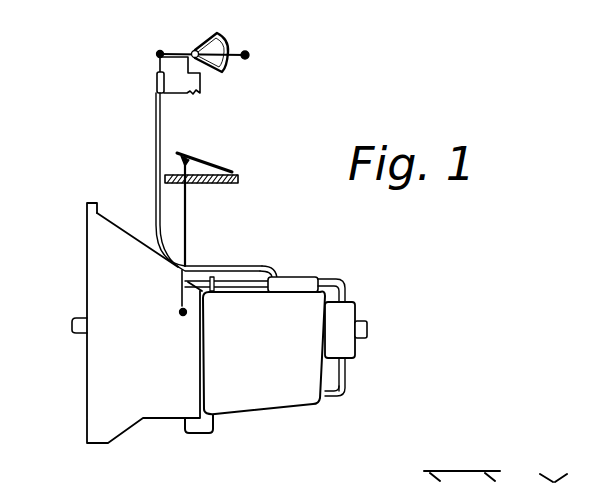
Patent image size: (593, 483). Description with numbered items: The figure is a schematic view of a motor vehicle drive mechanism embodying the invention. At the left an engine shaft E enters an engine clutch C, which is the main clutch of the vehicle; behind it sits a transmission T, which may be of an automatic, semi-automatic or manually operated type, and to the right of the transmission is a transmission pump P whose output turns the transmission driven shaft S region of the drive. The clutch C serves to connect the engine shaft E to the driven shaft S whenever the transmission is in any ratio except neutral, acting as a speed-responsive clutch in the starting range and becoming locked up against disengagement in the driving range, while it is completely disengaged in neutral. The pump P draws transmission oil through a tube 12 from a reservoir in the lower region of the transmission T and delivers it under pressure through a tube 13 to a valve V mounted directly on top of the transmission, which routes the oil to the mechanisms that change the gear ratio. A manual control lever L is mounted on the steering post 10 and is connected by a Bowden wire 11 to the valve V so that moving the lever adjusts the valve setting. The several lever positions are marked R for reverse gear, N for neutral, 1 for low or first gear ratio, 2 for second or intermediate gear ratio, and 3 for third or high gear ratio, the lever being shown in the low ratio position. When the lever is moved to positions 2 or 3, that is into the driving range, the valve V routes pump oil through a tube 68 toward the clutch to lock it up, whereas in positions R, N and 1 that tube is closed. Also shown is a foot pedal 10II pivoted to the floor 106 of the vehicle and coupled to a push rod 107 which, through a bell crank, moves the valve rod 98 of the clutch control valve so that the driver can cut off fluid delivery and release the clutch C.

The manual control lever L is at (217, 50).
The third or high gear ratio position 3 is at (223, 37).
The second or intermediate gear ratio position 2 is at (230, 43).
The low or first gear ratio position 1 is at (250, 54).
The neutral position N is at (232, 63).
The reverse gear position R is at (233, 72).
The steering post 10 is at (203, 93).
The Bowden wire 11 is at (156, 137).
The foot pedal 10II is at (215, 153).
The floor of the vehicle 106 is at (238, 184).
The push rod 107 is at (187, 218).
The tube 68 is at (275, 262).
The valve V is at (302, 281).
The tube 13 is at (337, 283).
The valve rod 98 is at (179, 311).
The engine shaft E is at (72, 329).
The engine clutch C is at (150, 323).
The transmission T is at (264, 353).
The transmission pump P is at (340, 330).
The transmission driven shaft S is at (368, 329).
The tube 12 is at (345, 393).